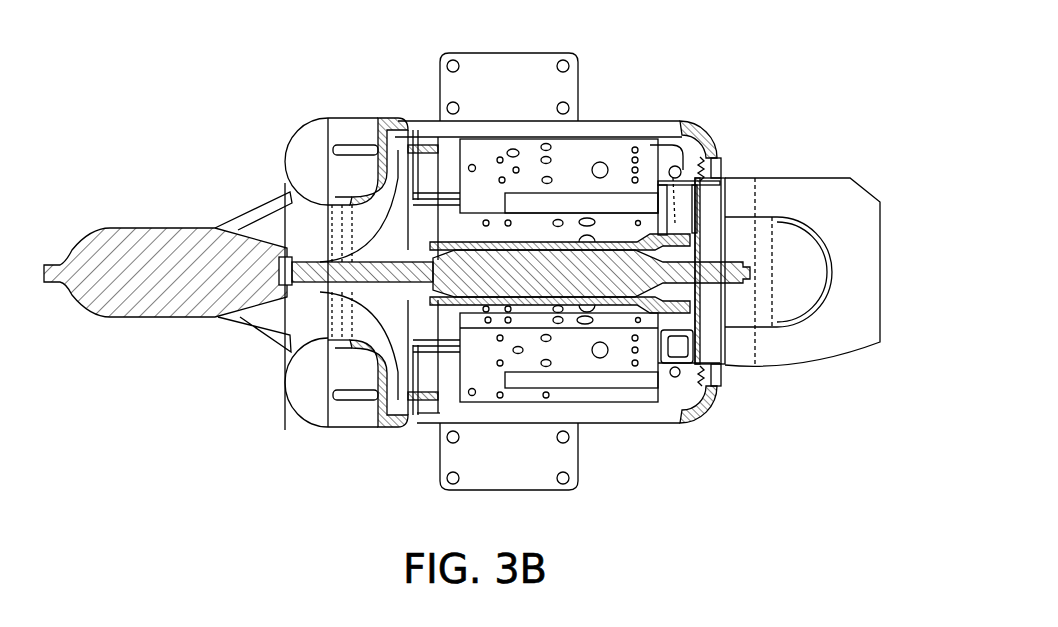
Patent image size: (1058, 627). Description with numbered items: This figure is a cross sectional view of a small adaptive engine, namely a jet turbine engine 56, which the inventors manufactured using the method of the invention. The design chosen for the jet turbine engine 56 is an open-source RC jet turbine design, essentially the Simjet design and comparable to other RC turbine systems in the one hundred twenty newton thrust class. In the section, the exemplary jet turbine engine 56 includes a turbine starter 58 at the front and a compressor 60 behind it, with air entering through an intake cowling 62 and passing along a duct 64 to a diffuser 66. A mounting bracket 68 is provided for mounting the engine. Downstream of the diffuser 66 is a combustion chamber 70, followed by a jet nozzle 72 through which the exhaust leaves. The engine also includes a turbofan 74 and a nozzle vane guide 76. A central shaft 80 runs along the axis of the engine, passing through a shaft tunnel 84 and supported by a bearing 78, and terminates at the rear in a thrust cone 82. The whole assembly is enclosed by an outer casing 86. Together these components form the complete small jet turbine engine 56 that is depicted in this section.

The jet turbine engine 56 is at (864, 66).
The turbine starter 58 is at (125, 228).
The compressor 60 is at (305, 253).
The intake cowling 62 is at (313, 128).
The duct 64 is at (380, 138).
The diffuser 66 is at (425, 147).
The mounting bracket 68 is at (492, 62).
The combustion chamber 70 is at (582, 153).
The jet nozzle 72 is at (733, 186).
The turbofan 74 is at (710, 190).
The nozzle vane guide 76 is at (670, 165).
The bearing 78 is at (690, 250).
The shaft 80 is at (820, 280).
The thrust cone 82 is at (837, 283).
The shaft tunnel 84 is at (650, 312).
The outer casing 86 is at (712, 398).